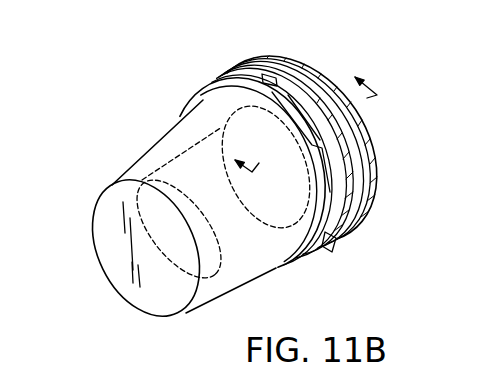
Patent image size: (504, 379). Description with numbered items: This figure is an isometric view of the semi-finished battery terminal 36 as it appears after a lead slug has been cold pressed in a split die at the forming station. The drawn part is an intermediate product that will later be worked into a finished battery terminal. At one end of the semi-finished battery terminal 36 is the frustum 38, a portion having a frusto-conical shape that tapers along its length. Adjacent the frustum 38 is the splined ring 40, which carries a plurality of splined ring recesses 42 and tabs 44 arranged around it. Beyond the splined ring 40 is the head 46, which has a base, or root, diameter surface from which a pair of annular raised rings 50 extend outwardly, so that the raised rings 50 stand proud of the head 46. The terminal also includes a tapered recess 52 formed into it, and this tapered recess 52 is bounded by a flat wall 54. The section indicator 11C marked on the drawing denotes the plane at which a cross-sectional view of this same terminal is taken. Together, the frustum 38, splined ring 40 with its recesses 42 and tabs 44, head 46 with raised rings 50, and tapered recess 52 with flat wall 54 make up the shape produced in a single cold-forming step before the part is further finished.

The semi-finished battery terminal 36 is at (142, 105).
The frustum 38 is at (140, 155).
The splined ring 40 is at (205, 83).
The splined ring recesses 42 is at (338, 232).
The tabs 44 is at (233, 77).
The head 46 is at (375, 153).
The annular raised rings 50 is at (277, 58).
The tapered recess 52 is at (250, 268).
The flat wall 54 is at (137, 268).
The section line 11C is at (286, 109).